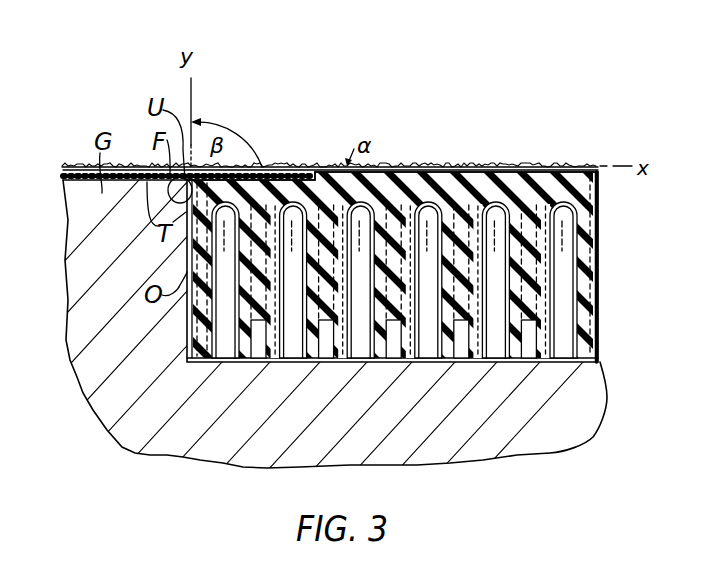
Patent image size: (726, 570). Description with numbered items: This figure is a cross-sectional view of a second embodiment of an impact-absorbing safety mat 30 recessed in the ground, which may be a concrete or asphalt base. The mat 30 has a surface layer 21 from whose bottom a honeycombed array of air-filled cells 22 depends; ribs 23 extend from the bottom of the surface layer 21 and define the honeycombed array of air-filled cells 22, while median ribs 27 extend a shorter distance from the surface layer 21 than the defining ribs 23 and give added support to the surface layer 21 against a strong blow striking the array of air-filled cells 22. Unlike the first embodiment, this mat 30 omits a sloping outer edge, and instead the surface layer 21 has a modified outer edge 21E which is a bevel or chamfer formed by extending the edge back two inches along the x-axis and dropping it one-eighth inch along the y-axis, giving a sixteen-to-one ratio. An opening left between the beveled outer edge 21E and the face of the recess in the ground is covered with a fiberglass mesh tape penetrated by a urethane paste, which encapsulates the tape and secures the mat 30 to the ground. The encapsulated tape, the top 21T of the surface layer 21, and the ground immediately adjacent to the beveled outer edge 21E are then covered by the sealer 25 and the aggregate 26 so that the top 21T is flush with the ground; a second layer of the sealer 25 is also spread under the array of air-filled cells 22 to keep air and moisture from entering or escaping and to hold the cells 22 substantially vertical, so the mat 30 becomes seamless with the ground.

The surface layer 21 is at (363, 236).
The outer edge 21E is at (312, 181).
The top 21T is at (447, 176).
The air-filled cells 22 is at (563, 304).
The ribs 23 is at (598, 333).
The sealer 25 is at (282, 168).
The aggregate 26 is at (336, 171).
The median ribs 27 is at (531, 187).
The impact-absorbing safety mat 30 is at (606, 277).